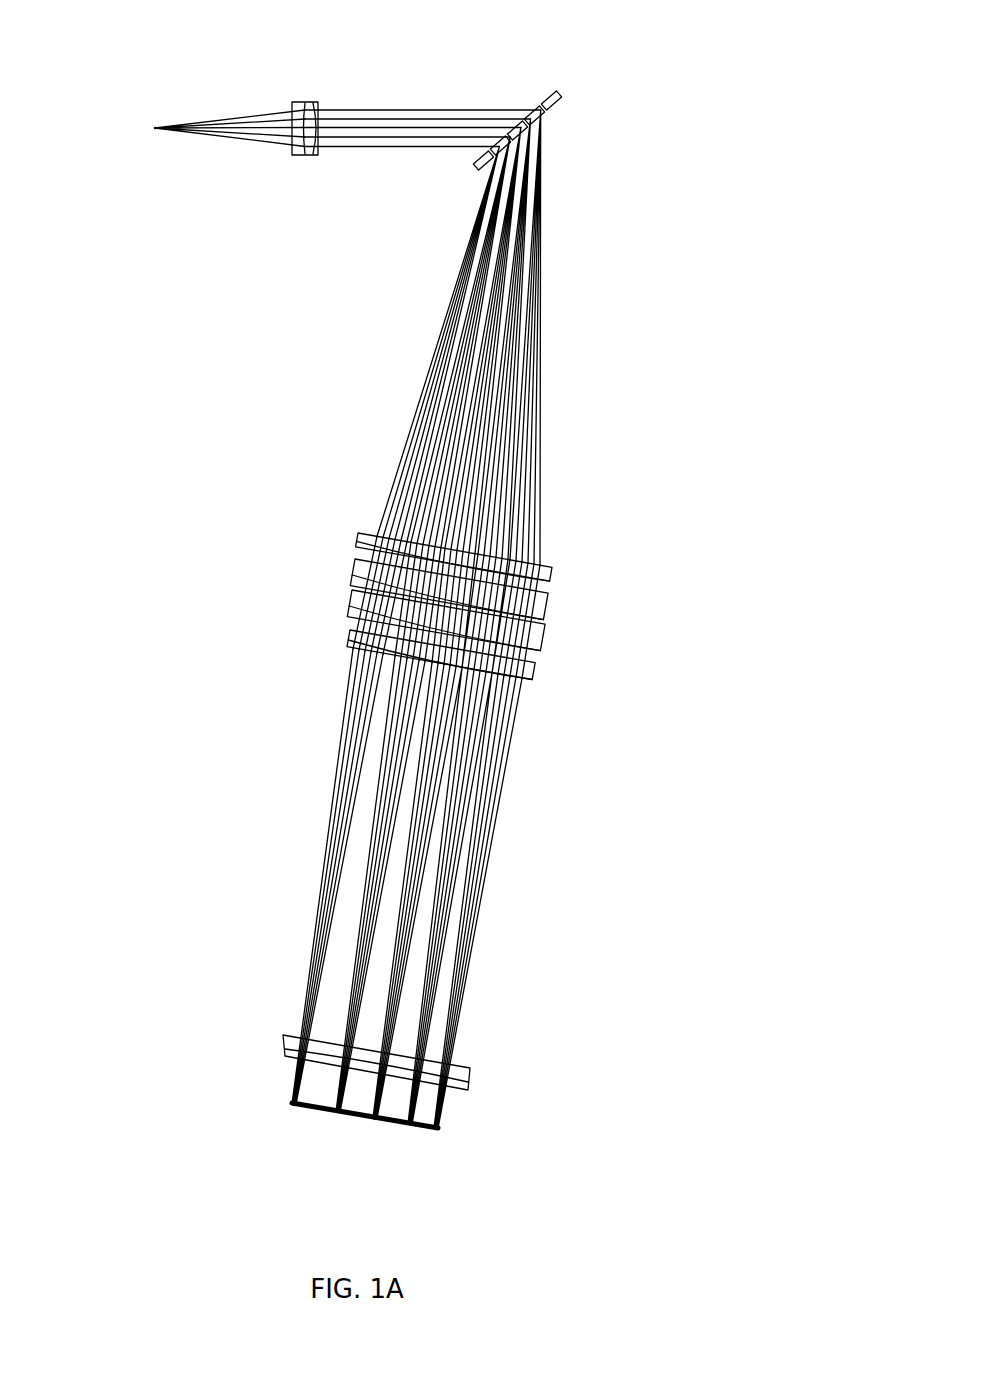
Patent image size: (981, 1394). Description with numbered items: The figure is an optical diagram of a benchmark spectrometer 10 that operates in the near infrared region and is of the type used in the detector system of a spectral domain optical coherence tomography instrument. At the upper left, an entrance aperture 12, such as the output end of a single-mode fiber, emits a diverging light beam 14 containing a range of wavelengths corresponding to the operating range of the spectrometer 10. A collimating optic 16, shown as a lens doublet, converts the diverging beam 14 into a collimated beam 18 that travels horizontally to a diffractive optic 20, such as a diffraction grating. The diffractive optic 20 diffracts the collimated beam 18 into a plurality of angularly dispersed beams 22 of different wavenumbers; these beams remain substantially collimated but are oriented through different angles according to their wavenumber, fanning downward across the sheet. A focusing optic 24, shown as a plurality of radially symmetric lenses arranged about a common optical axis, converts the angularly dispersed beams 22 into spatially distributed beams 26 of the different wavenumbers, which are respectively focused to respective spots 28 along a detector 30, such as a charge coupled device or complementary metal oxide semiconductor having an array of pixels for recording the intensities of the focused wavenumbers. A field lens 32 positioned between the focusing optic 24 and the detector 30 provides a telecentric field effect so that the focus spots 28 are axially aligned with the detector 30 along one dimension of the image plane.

The benchmark spectrometer 10 is at (645, 154).
The entrance aperture 12 is at (154, 128).
The diverging light beam 14 is at (251, 146).
The collimating optic 16 is at (298, 102).
The collimated beam 18 is at (397, 100).
The diffractive optic 20 is at (559, 90).
The angularly dispersed beams 22 is at (428, 343).
The focusing optic 24 is at (564, 562).
The spatially distributed beams 26 is at (332, 783).
The focus spots 28 is at (293, 1103).
The detector 30 is at (322, 1110).
The field lens 32 is at (472, 1082).